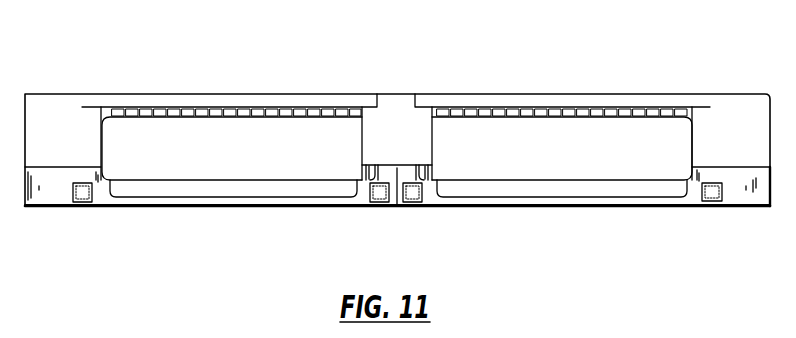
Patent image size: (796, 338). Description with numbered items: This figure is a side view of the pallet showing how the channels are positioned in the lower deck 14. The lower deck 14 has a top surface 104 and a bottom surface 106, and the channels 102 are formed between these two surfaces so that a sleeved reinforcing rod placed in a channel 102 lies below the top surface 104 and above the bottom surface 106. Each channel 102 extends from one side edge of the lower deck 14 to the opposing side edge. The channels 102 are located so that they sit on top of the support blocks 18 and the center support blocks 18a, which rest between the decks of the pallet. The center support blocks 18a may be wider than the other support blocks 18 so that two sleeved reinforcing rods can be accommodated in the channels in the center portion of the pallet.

The lower deck 14 is at (612, 98).
The support blocks 18 is at (88, 153).
The center support blocks 18a is at (427, 141).
The top surface 104 is at (180, 186).
The bottom surface 106 is at (186, 207).
The channels 102 is at (83, 197).